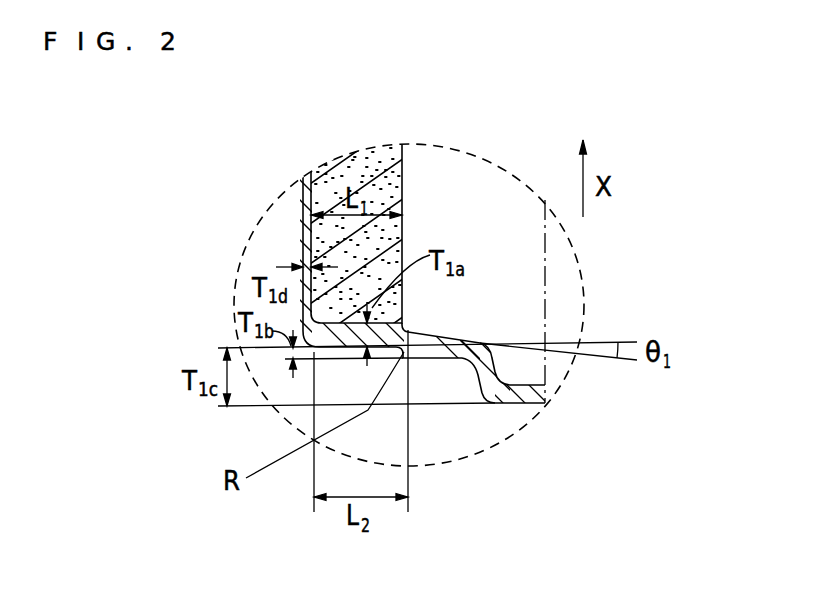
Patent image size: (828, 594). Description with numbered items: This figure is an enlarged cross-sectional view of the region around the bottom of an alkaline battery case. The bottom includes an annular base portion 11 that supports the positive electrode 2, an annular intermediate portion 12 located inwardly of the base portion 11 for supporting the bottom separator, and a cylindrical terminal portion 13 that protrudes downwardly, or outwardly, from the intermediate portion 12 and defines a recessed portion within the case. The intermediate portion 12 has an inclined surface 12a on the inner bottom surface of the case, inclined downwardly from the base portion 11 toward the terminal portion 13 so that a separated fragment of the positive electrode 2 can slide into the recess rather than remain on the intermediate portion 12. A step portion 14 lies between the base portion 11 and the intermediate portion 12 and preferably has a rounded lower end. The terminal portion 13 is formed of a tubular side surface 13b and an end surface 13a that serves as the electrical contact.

The positive electrode 2 is at (306, 236).
The base portion 11 is at (340, 350).
The intermediate portion 12 is at (442, 350).
The inclined surface 12a is at (462, 338).
The terminal portion 13 is at (565, 505).
The end surface 13a is at (524, 404).
The side surface 13b is at (485, 388).
The step portion 14 is at (410, 333).